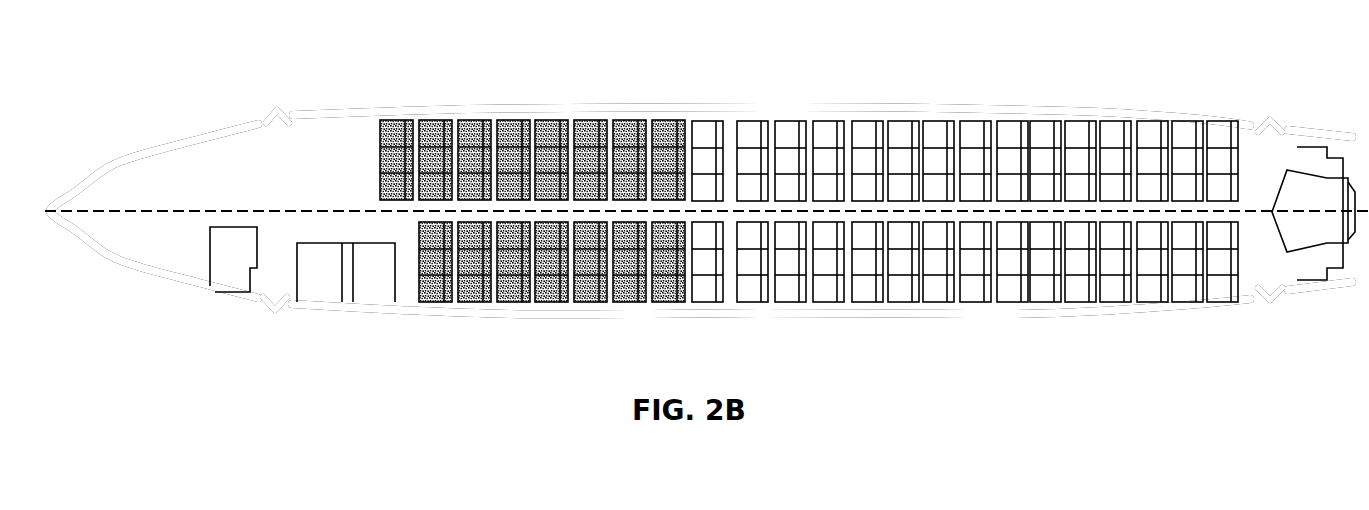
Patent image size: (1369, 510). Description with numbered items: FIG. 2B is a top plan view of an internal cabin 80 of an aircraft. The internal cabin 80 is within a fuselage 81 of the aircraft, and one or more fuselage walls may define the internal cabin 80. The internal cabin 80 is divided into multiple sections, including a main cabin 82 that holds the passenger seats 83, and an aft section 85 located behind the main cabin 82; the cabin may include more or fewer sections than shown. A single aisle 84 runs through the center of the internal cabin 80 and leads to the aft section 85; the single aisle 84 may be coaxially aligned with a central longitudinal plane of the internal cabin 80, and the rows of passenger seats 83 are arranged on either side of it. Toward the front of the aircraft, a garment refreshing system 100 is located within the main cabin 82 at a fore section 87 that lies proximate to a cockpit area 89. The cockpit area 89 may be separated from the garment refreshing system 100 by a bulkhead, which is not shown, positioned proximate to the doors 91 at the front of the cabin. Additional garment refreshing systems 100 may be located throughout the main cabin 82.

The internal cabin 80 is at (294, 50).
The fuselage 81 is at (498, 110).
The main cabin 82 is at (436, 133).
The passenger seats 83 is at (706, 140).
The single aisle 84 is at (828, 205).
The aft section 85 is at (1256, 145).
The fore section 87 is at (344, 142).
The cockpit area 89 is at (150, 172).
The doors 91 is at (277, 110).
The garment refreshing system 100 is at (348, 283).